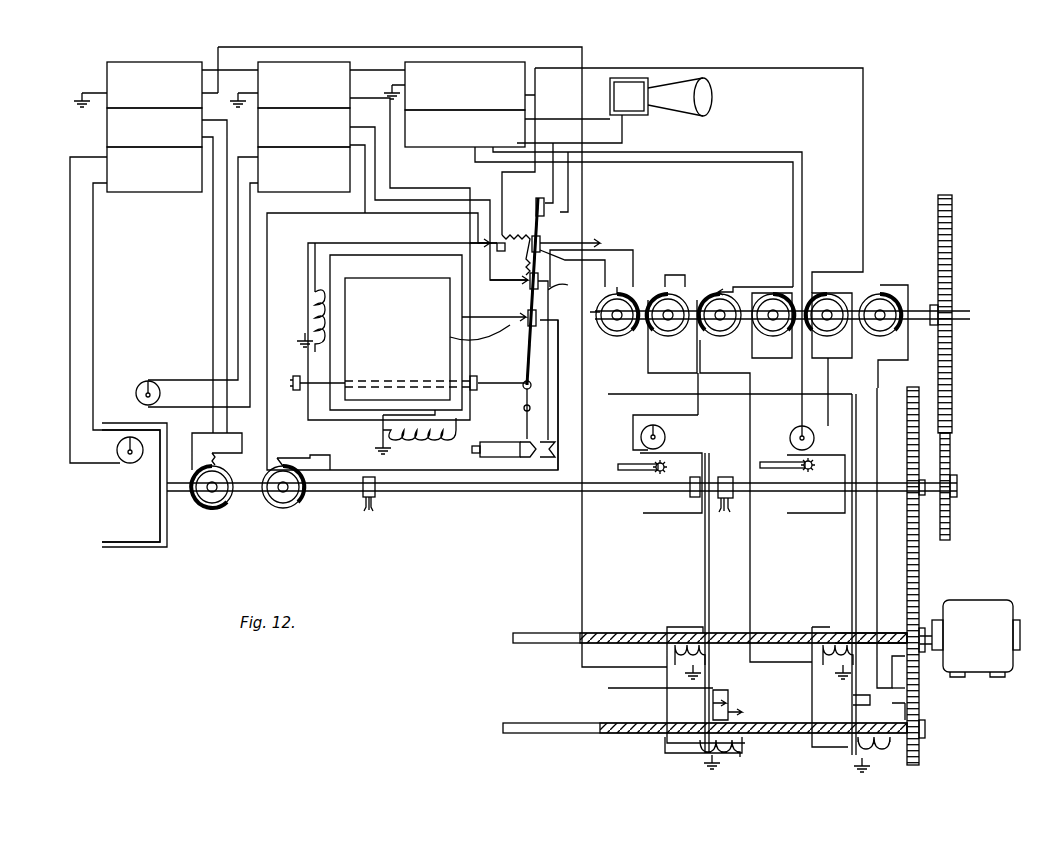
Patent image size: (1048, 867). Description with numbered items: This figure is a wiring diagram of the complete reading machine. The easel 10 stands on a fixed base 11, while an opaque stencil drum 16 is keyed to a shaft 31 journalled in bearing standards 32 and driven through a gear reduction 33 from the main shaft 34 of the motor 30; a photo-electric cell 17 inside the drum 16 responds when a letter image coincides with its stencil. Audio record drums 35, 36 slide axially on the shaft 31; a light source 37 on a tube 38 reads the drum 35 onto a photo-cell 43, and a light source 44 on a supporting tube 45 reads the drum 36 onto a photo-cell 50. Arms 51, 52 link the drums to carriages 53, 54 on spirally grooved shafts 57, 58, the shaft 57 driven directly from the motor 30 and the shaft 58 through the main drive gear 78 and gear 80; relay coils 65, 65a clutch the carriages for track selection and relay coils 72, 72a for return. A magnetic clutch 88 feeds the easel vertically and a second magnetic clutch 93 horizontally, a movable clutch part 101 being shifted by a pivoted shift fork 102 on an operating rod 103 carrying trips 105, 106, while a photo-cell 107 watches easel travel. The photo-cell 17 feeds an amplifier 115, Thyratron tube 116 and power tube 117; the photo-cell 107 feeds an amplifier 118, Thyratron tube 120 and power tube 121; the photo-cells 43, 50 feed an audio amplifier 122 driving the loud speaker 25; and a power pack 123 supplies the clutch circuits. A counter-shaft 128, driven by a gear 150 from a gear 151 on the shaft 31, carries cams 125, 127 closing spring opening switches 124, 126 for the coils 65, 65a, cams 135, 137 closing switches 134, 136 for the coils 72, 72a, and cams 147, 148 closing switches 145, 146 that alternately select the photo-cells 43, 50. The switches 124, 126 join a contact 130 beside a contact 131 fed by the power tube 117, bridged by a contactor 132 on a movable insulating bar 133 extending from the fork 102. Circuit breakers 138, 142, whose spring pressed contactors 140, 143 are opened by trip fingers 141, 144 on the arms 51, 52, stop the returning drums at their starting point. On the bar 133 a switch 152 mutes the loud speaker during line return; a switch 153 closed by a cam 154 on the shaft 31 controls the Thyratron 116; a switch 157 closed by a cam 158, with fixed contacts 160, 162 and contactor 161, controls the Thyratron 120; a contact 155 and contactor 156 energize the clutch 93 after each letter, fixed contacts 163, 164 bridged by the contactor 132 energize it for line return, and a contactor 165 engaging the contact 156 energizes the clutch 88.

The easel 10 is at (373, 272).
The fixed base 11 is at (402, 308).
The opaque drum 16 is at (182, 529).
The photo-electric cell 17 is at (138, 462).
The loud speaker 25 is at (643, 107).
The electric motor 30 is at (970, 638).
The shaft 31 is at (896, 488).
The bearing standards 32 is at (750, 502).
The gear reduction 33 is at (920, 565).
The main shaft 34 is at (888, 632).
The audio record drum 35 is at (672, 515).
The audio record drum 36 is at (815, 515).
The light source 37 is at (670, 468).
The exteriorly projecting tube 38 is at (630, 473).
The photo-cell 43 is at (665, 437).
The light source 44 is at (812, 460).
The supporting tube 45 is at (760, 464).
The photo-cell 50 is at (790, 438).
The arm 51 is at (706, 565).
The arm 52 is at (848, 568).
The movable carriage 53 is at (655, 700).
The movable carriage 54 is at (812, 680).
The spirally grooved shaft 57 is at (540, 631).
The spirally grooved shaft 58 is at (555, 721).
The relay coil 65 is at (680, 625).
The relay coil 65a is at (833, 617).
The relay coil 72 is at (722, 765).
The relay coil 72a is at (870, 768).
The main drive gear 78 is at (925, 640).
The gear 80 is at (925, 735).
The magnetic clutch 88 is at (298, 297).
The magnetic clutch 93 is at (410, 440).
The movable clutch part 101 is at (525, 462).
The pivoted shift fork 102 is at (524, 432).
The operating rod 103 is at (490, 375).
The trip 105 is at (300, 395).
The trip 106 is at (474, 392).
The photo-cell 107 is at (155, 381).
The amplifier 115 is at (136, 344).
The Thyratron tube 116 is at (167, 270).
The power tube 117 is at (166, 85).
The amplifier 118 is at (249, 277).
The Thyratron tube 120 is at (393, 194).
The power tube 121 is at (363, 152).
The audio amplifier 122 is at (603, 268).
The power pack 123 is at (540, 357).
The spring opening switch 124 is at (591, 268).
The rotatable cam 125 is at (620, 338).
The spring opening switch 126 is at (683, 270).
The rotatable cam 127 is at (672, 338).
The counter-shaft 128 is at (915, 312).
The contact 130 is at (572, 268).
The second contact 131 is at (600, 243).
The bridging contactor 132 is at (548, 238).
The movable insulating bar 133 is at (527, 350).
The spring opening switch 134 is at (829, 288).
The rotatable cam 135 is at (831, 338).
The spring opening switch 136 is at (882, 285).
The rotatable cam 137 is at (884, 338).
The circuit breaker 138 is at (751, 712).
The spring pressed contactor 140 is at (730, 698).
The trip finger 141 is at (732, 680).
The circuit breaker 142 is at (925, 688).
The spring pressed contactor 143 is at (925, 703).
The trip finger 144 is at (853, 700).
The spring opening switch 145 is at (725, 290).
The spring opening switch 146 is at (770, 280).
The cam 147 is at (724, 338).
The cam 148 is at (777, 338).
The gear 150 is at (963, 360).
The gear 151 is at (957, 486).
The switch 152 is at (546, 200).
The spring opened switch 153 is at (217, 451).
The cam 154 is at (226, 500).
The contact 155 is at (552, 325).
The contactor 156 is at (520, 320).
The spring opening switch 157 is at (285, 452).
The cam 158 is at (290, 500).
The fixed contact 160 is at (568, 358).
The contactor 161 is at (510, 284).
The fixed contact 162 is at (506, 255).
The fixed contact 163 is at (505, 240).
The fixed contact 164 is at (470, 233).
The contactor 165 is at (462, 330).